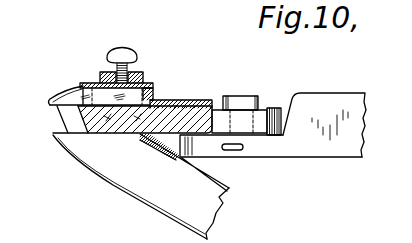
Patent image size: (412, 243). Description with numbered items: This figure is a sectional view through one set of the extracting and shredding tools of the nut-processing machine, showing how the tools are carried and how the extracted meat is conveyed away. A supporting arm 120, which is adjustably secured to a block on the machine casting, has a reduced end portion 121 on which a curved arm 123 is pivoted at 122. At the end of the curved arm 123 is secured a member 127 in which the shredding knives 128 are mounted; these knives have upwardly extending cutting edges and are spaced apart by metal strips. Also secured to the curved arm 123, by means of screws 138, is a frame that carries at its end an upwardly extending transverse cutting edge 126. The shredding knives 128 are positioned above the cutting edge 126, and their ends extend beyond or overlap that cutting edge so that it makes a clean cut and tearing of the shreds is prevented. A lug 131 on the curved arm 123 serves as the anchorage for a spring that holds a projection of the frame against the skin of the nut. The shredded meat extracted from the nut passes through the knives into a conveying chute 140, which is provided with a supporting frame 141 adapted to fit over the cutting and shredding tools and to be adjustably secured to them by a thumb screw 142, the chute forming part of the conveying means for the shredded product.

The supporting arm 120 is at (323, 100).
The reduced end portion 121 is at (272, 147).
The pivot 122 is at (249, 100).
The curved arm 123 is at (200, 105).
The cutting edge 126 is at (49, 106).
The member 127 is at (160, 100).
The shredding knives 128 is at (73, 97).
The lug 131 is at (243, 149).
The screws 138 is at (137, 116).
The conveying chute 140 is at (143, 199).
The supporting frame 141 is at (138, 72).
The thumb screw 142 is at (122, 52).